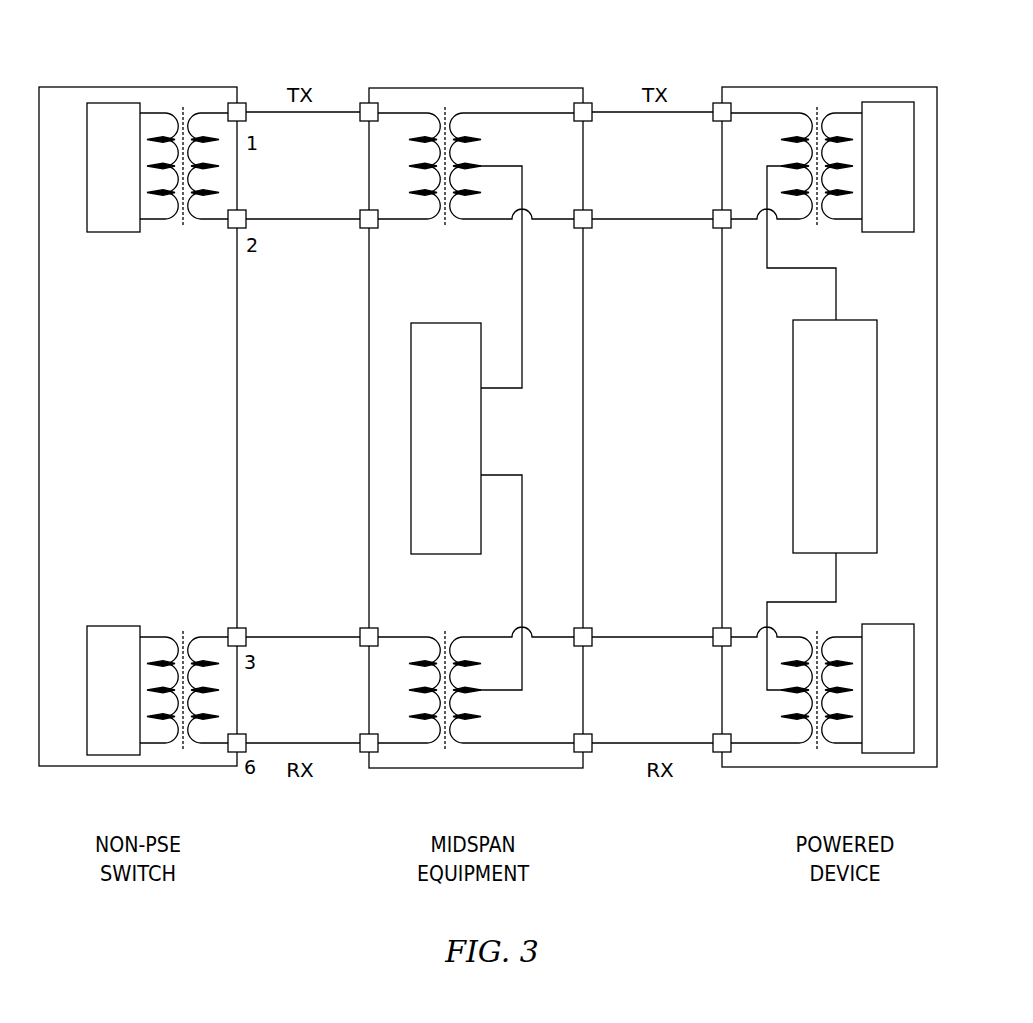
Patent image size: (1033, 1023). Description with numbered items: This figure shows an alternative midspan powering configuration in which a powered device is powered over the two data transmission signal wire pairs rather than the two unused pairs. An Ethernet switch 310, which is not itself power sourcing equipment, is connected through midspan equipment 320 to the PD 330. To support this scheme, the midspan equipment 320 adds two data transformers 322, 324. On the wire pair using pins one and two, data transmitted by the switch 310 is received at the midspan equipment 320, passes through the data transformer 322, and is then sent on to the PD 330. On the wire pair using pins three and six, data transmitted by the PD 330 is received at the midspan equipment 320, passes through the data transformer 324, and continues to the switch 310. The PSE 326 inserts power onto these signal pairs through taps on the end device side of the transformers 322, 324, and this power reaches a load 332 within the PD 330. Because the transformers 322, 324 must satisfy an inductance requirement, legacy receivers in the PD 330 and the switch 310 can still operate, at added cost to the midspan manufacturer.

The Ethernet switch 310 is at (137, 87).
The midspan equipment 320 is at (476, 420).
The data transformer 322 is at (445, 100).
The data transformer 324 is at (445, 747).
The PSE 326 is at (445, 323).
The PD 330 is at (829, 395).
The load 332 is at (865, 320).